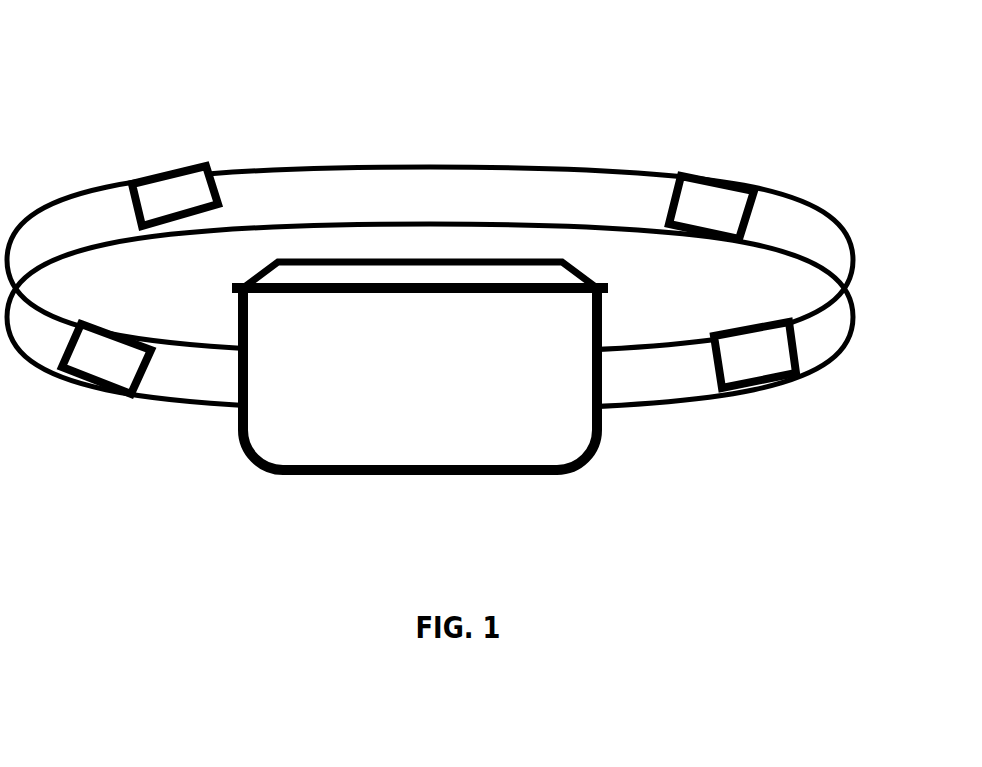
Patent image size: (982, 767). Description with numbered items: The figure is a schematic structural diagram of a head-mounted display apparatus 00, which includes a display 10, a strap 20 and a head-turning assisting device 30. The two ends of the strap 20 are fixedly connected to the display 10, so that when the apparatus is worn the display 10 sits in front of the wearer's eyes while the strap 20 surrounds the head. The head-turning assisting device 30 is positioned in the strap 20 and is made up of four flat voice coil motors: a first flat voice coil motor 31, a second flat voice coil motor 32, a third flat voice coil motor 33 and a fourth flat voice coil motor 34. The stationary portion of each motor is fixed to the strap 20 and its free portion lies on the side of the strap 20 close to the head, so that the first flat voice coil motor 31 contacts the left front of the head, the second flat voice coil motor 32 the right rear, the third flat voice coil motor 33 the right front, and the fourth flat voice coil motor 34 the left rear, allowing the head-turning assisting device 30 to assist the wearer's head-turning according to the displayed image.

The head-mounted display apparatus 00 is at (41, 52).
The display 10 is at (460, 465).
The strap 20 is at (391, 163).
The head-turning assisting device 30 is at (492, 298).
The first flat voice coil motor 31 is at (805, 359).
The second flat voice coil motor 32 is at (220, 191).
The third flat voice coil motor 33 is at (148, 394).
The fourth flat voice coil motor 34 is at (664, 188).